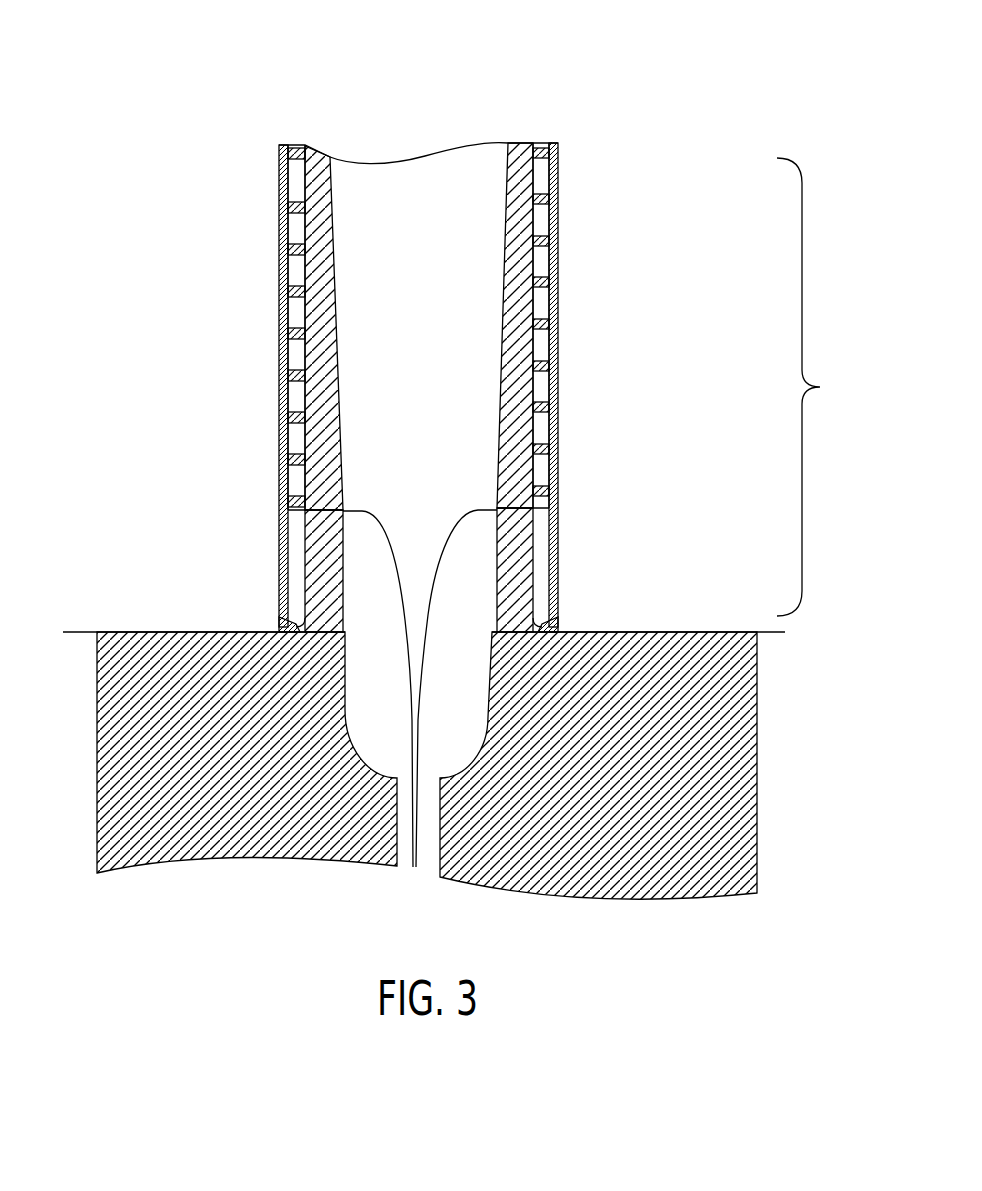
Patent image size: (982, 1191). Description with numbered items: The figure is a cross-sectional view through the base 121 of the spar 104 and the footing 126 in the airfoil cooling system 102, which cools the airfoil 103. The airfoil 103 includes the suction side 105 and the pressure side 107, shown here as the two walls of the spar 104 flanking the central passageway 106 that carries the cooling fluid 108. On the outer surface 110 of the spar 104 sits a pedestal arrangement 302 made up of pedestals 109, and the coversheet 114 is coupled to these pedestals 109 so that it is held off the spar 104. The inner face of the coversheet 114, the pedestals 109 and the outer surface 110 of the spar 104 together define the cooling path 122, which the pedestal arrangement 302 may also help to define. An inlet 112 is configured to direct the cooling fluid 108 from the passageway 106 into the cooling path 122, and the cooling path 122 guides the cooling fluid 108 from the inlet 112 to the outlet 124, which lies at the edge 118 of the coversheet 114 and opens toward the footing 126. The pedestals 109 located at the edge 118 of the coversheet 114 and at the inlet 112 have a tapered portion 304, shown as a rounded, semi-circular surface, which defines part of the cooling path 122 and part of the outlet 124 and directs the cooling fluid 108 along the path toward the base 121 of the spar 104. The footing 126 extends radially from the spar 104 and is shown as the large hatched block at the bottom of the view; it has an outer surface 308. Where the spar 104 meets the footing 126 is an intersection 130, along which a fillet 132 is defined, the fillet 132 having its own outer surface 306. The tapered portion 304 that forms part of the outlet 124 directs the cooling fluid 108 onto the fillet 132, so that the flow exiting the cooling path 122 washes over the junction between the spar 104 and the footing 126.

The airfoil cooling system 102 is at (592, 74).
The airfoil 103 is at (815, 387).
The spar 104 is at (286, 180).
The suction side 105 is at (281, 262).
The passageway 106 is at (339, 228).
The pressure side 107 is at (558, 284).
The cooling fluid 108 is at (417, 827).
The pedestals 109 is at (292, 336).
The outer surface 110 is at (292, 466).
The inlet 112 is at (293, 497).
The coversheet 114 is at (288, 420).
The edge 118 is at (284, 627).
The base 121 is at (512, 646).
The cooling path 122 is at (291, 532).
The outlet 124 is at (292, 620).
The footing 126 is at (112, 743).
The intersection 130 is at (338, 612).
The fillet 132 is at (296, 625).
The pedestal arrangement 302 is at (562, 445).
The tapered portion 304 is at (298, 508).
The outer surface 306 is at (280, 628).
The outer surface 308 is at (114, 629).